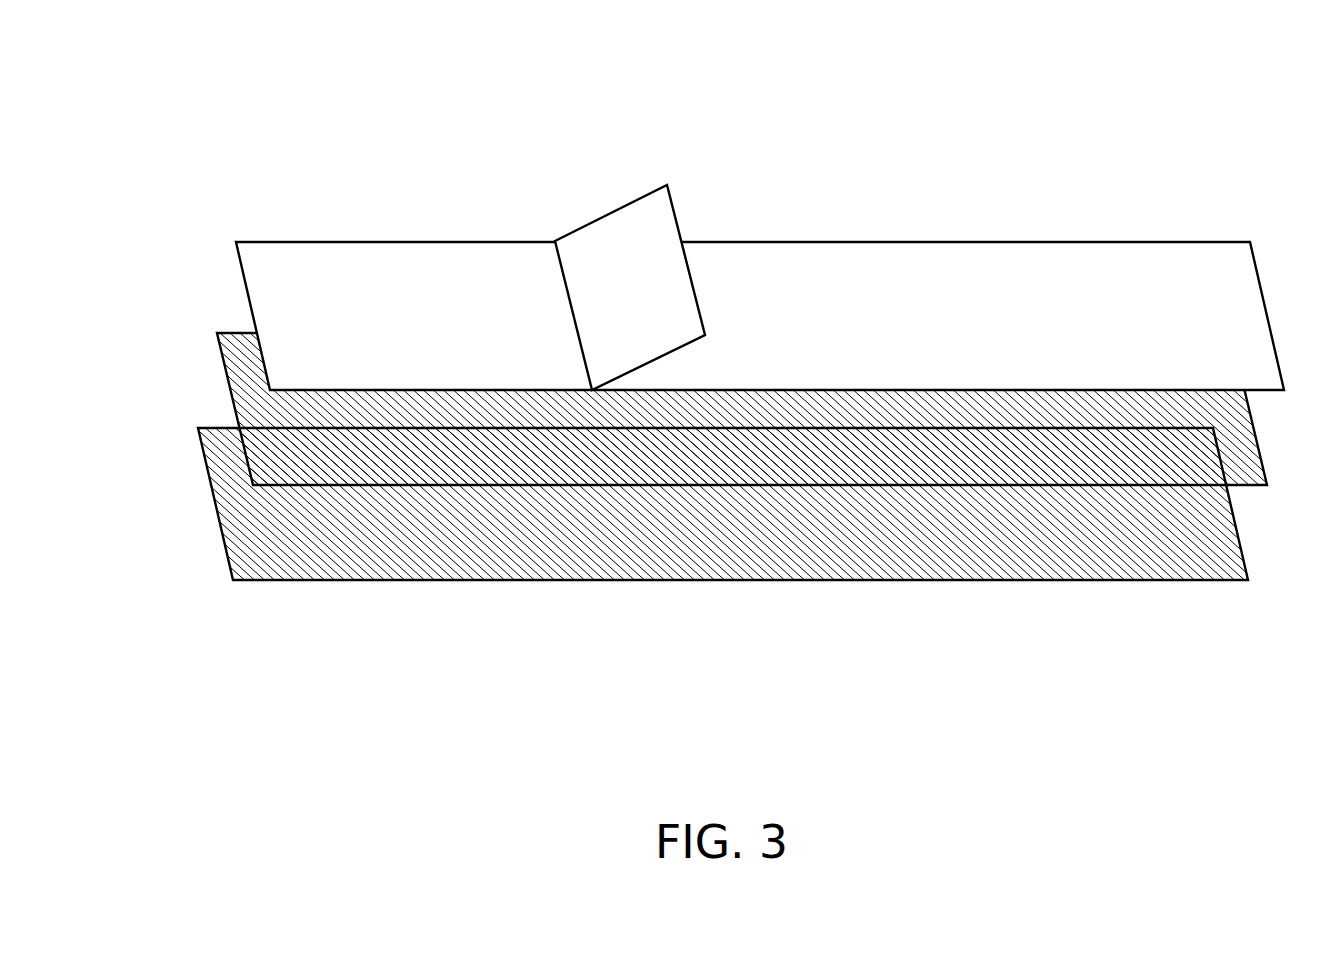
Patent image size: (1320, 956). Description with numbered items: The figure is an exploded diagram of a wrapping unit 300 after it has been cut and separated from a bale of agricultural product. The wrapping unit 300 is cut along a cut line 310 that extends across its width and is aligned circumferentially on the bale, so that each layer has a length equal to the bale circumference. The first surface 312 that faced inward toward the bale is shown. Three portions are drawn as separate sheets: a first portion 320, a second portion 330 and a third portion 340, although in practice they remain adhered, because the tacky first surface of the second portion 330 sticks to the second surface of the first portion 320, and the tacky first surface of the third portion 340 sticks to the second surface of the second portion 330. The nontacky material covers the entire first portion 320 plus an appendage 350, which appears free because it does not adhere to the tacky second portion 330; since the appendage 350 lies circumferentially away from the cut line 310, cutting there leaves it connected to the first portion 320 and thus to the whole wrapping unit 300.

The wrapping unit 300 is at (742, 680).
The cut line 310 is at (226, 546).
The first surface 312 is at (1060, 548).
The first portion 320 is at (292, 261).
The second portion 330 is at (240, 345).
The third portion 340 is at (225, 445).
The appendage 350 is at (620, 242).